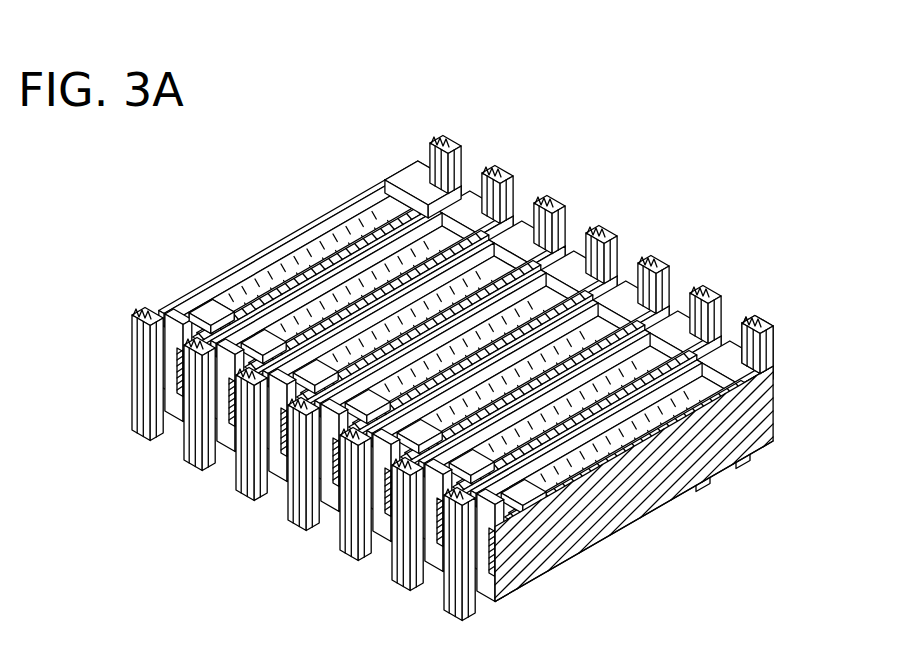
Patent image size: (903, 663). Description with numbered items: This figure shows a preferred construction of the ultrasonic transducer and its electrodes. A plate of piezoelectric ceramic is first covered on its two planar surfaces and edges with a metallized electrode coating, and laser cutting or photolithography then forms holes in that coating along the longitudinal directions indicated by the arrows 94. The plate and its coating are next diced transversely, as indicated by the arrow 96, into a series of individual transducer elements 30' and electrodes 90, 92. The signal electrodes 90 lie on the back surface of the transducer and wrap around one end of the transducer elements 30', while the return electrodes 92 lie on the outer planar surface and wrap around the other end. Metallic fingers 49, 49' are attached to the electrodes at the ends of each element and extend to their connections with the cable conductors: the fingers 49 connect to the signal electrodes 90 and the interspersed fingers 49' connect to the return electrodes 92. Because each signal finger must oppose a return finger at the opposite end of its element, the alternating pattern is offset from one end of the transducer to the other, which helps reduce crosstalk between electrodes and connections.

The transducer element 30' is at (634, 499).
The metallic finger 49 is at (425, 381).
The metallic finger 49' is at (480, 348).
The signal electrode 90 is at (332, 292).
The return electrode 92 is at (655, 514).
The longitudinal direction arrow 94 is at (158, 285).
The transverse dicing arrow 96 is at (745, 303).